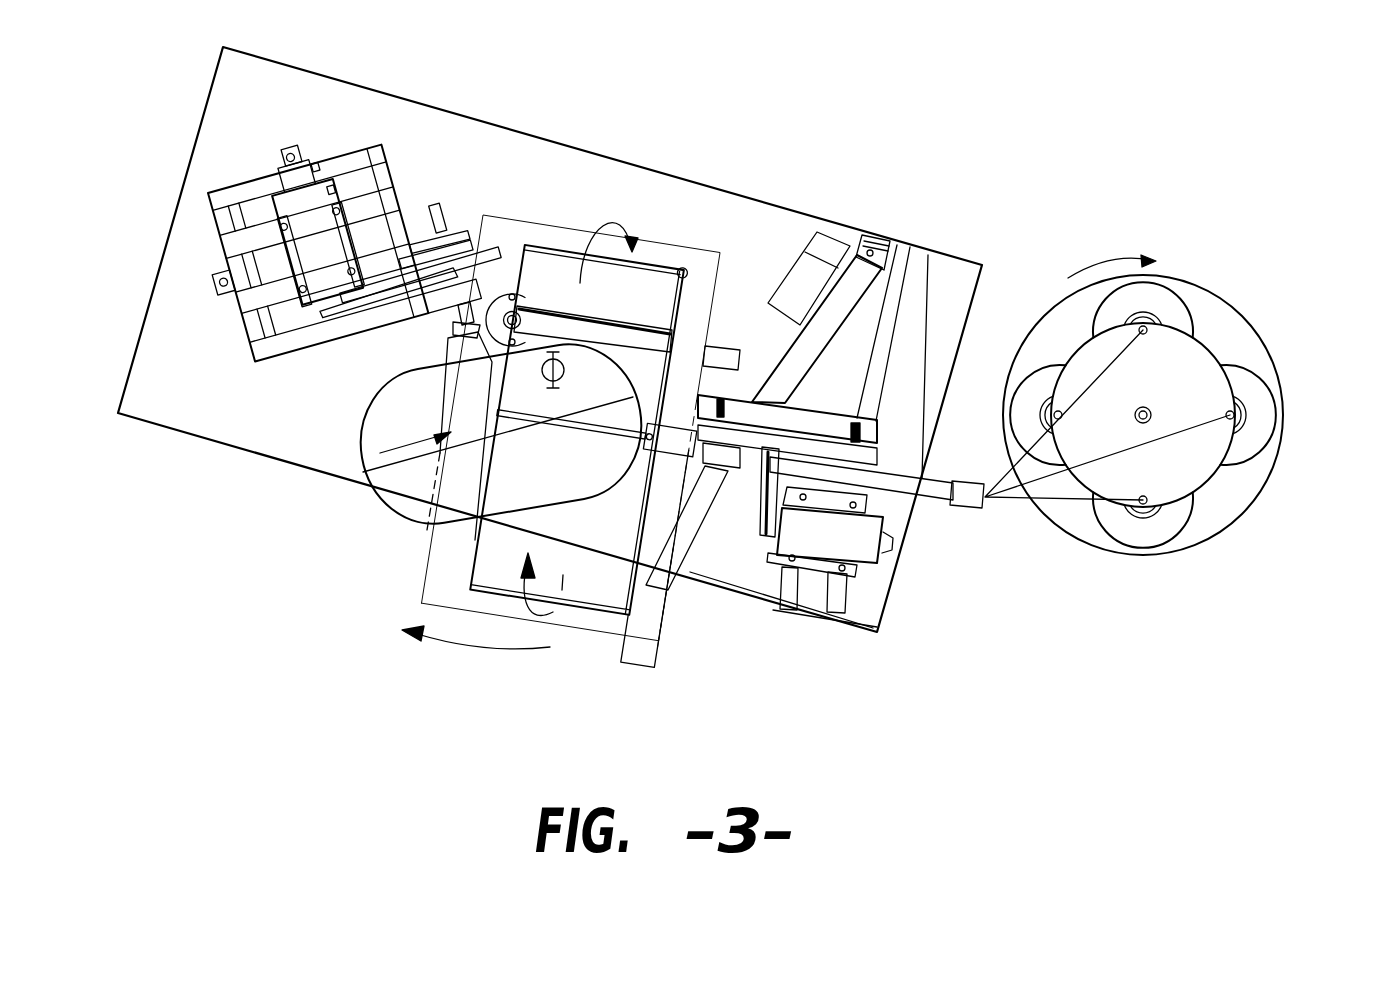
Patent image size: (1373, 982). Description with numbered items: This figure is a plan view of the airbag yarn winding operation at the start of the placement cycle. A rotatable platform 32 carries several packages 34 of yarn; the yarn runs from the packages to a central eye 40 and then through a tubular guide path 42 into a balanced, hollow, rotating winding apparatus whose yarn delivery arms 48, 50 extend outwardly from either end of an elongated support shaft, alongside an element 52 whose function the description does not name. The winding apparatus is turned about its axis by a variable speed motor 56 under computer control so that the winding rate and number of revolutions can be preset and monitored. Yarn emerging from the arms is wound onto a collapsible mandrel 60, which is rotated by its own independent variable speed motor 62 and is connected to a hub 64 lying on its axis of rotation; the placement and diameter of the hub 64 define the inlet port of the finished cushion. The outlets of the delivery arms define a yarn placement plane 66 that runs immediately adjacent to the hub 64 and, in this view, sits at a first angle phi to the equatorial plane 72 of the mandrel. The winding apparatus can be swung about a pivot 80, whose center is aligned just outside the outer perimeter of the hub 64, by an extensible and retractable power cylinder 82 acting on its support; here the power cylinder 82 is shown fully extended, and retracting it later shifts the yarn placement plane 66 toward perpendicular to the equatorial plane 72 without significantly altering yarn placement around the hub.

The rotatable platform 32 is at (1247, 317).
The packages 34 is at (1050, 357).
The central eye 40 is at (968, 512).
The tubular guide path 42 is at (923, 498).
The yarn delivery arm 48 is at (583, 287).
The yarn delivery arm 50 is at (588, 613).
The guide bar 52 is at (683, 303).
The variable speed motor 56 is at (867, 540).
The collapsible mandrel 60 is at (390, 512).
The variable speed motor 62 is at (322, 263).
The hub 64 is at (447, 350).
The yarn placement plane 66 is at (433, 557).
The equatorial plane 72 is at (373, 488).
The pivot 80 is at (500, 278).
The power cylinder 82 is at (700, 463).